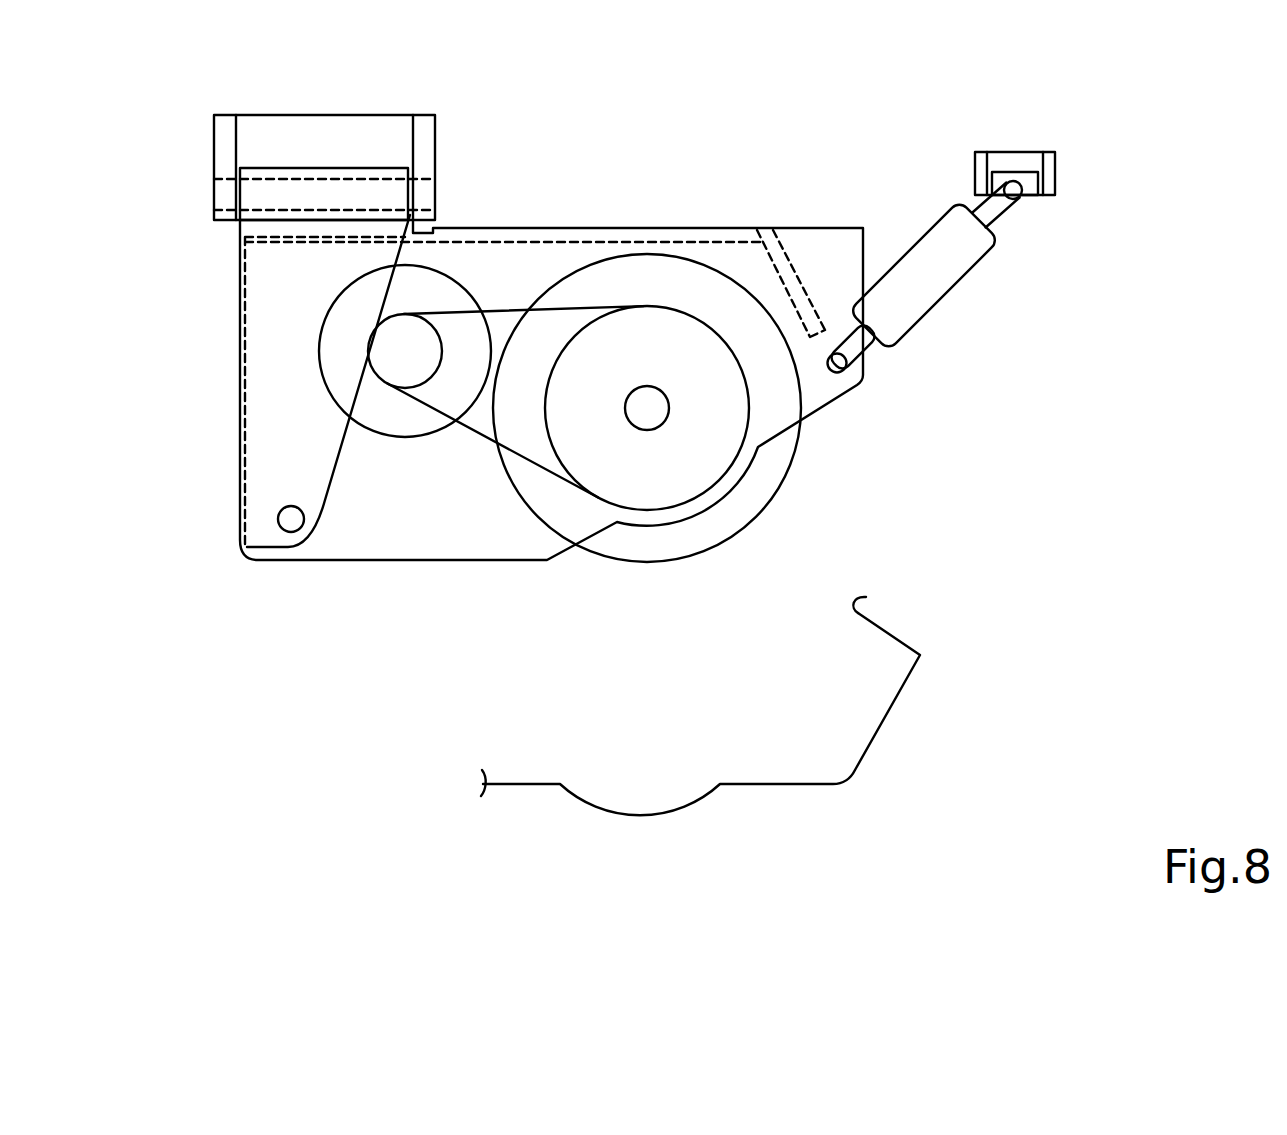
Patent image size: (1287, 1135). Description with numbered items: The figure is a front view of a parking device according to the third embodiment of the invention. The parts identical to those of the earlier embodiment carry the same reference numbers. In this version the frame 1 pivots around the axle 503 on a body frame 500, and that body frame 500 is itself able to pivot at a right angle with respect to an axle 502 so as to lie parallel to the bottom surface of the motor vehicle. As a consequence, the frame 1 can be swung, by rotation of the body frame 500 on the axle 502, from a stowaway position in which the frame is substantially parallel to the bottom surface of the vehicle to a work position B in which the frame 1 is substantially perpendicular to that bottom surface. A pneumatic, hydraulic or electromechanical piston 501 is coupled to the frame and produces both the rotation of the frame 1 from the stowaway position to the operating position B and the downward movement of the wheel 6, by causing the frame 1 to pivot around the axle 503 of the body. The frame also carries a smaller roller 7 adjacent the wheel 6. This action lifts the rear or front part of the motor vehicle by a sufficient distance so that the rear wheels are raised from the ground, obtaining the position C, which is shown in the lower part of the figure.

The frame 1 is at (363, 538).
The wheel 6 is at (670, 547).
The roller 7 is at (407, 423).
The body frame 500 is at (263, 317).
The piston 501 is at (977, 265).
The axle 502 is at (360, 197).
The axle 503 is at (290, 522).
The work position B is at (212, 447).
The raised position C is at (440, 780).